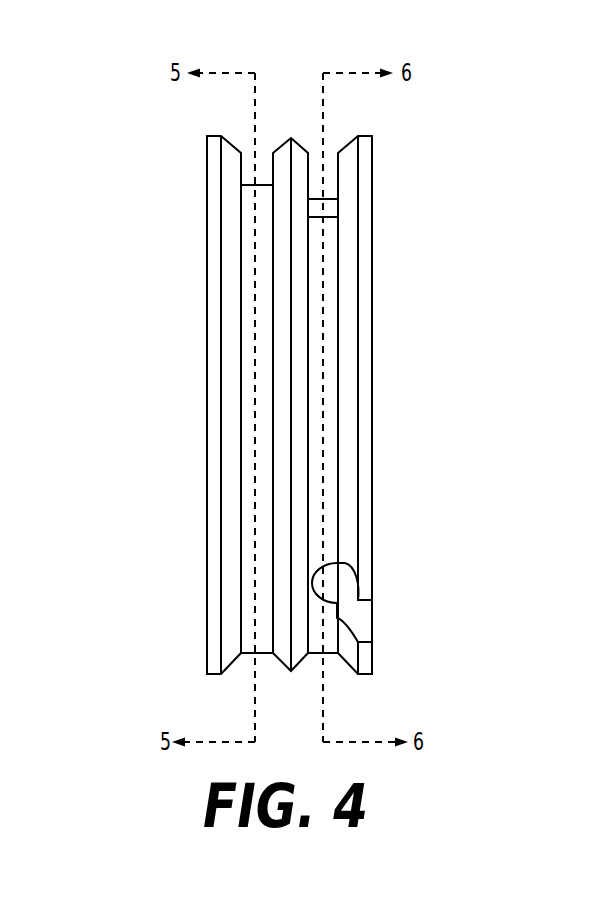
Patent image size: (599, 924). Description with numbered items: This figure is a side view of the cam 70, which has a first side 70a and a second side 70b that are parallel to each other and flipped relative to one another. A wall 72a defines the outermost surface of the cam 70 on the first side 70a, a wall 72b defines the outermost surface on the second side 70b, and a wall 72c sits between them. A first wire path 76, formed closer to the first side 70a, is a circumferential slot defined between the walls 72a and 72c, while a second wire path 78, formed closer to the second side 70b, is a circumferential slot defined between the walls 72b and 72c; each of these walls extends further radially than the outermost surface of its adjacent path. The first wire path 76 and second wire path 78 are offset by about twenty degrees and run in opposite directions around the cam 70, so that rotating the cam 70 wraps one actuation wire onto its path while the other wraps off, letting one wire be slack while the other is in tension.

The cam 70 is at (148, 397).
The first side 70a is at (206, 316).
The second side 70b is at (381, 273).
The wall 72a is at (214, 170).
The wall 72b is at (366, 142).
The wall 72c is at (290, 137).
The first wire path 76 is at (265, 149).
The second wire path 78 is at (332, 160).